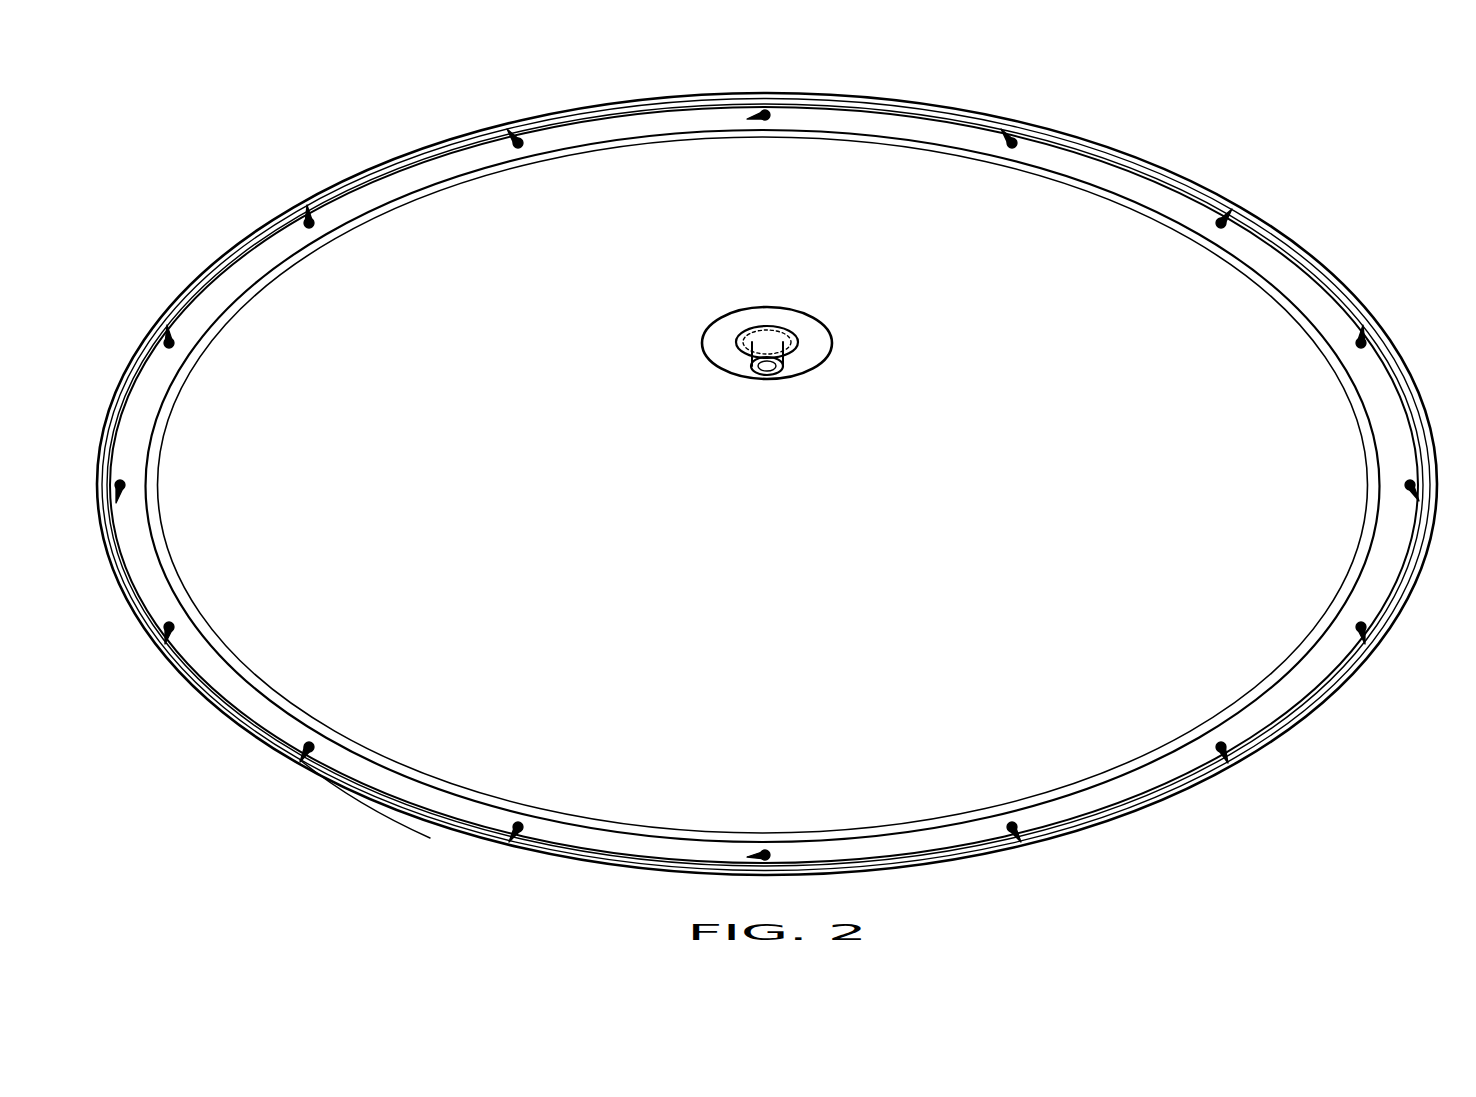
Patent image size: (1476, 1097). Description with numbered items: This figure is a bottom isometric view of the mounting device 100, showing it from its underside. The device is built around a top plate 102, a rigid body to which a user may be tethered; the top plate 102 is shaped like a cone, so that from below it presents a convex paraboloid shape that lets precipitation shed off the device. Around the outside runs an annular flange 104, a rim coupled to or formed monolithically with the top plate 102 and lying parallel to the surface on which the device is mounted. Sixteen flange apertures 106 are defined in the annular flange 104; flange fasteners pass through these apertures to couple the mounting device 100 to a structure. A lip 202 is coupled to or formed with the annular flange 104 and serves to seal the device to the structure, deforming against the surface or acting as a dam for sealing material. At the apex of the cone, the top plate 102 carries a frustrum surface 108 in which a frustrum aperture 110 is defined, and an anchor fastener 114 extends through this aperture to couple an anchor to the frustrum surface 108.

The mounting device 100 is at (165, 88).
The top plate 102 is at (1195, 315).
The annular flange 104 is at (1152, 195).
The flange apertures 106 is at (313, 217).
The frustrum surface 108 is at (723, 342).
The frustrum aperture 110 is at (765, 328).
The anchor fastener 114 is at (773, 332).
The lip 202 is at (378, 803).